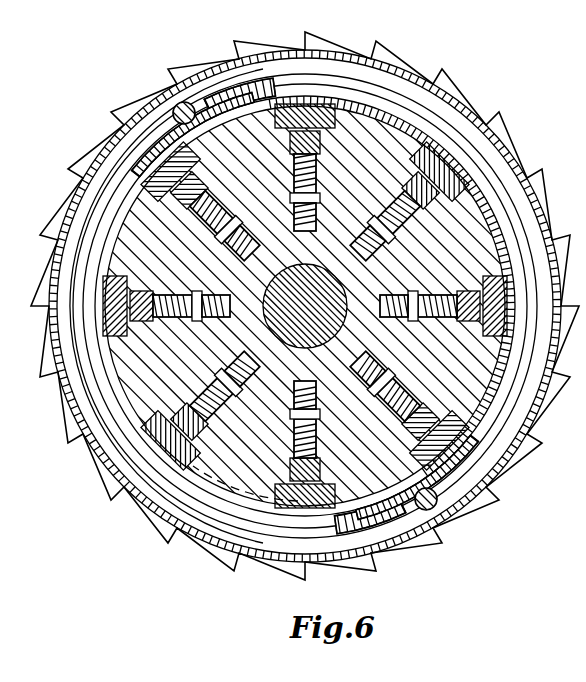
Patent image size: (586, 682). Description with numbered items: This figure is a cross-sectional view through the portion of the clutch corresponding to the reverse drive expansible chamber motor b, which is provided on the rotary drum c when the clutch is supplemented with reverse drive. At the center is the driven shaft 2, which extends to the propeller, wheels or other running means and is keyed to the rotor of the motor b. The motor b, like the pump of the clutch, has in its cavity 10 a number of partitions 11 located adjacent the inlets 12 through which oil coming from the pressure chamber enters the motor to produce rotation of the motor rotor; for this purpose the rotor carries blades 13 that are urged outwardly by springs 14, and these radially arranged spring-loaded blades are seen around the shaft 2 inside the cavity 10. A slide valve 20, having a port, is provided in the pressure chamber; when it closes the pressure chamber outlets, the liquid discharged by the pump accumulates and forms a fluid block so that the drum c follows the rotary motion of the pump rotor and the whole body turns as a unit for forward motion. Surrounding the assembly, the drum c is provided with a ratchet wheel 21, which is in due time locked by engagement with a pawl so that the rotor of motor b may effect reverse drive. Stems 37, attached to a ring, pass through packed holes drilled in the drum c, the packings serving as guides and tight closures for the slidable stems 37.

The driven shaft 2 is at (310, 282).
The cavity 10 is at (128, 378).
The partitions 11 is at (312, 112).
The inlets 12 is at (258, 104).
The blades 13 is at (110, 308).
The springs 14 is at (125, 335).
The slide valve 20 is at (162, 122).
The ratchet wheel 21 is at (447, 80).
The stems 37 is at (177, 106).
The expansible chamber motor b is at (195, 473).
The rotary drum c is at (106, 468).